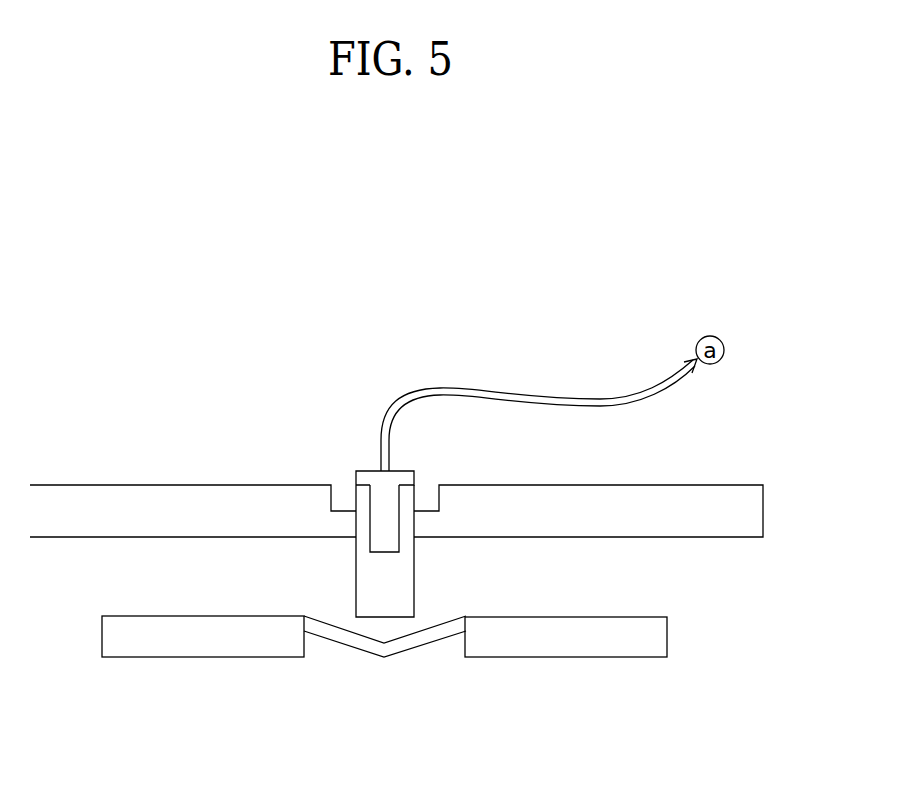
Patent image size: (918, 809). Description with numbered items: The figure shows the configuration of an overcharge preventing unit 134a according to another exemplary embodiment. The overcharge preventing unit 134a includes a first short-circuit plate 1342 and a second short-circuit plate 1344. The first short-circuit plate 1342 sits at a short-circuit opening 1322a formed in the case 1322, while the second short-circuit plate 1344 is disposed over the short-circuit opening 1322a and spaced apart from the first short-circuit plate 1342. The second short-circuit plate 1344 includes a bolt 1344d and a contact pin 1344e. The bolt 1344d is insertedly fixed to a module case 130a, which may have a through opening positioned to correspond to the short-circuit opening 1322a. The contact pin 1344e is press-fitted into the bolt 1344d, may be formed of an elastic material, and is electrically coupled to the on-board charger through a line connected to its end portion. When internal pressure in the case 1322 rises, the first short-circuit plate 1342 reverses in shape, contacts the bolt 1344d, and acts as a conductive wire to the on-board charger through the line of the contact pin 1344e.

The module case 130a is at (155, 502).
The overcharge preventing unit 134a is at (364, 447).
The second short-circuit plate 1344 is at (424, 447).
The bolt 1344d is at (426, 497).
The contact pin 1344e is at (404, 478).
The case 1322 is at (647, 636).
The short-circuit opening 1322a is at (465, 633).
The first short-circuit plate 1342 is at (361, 648).